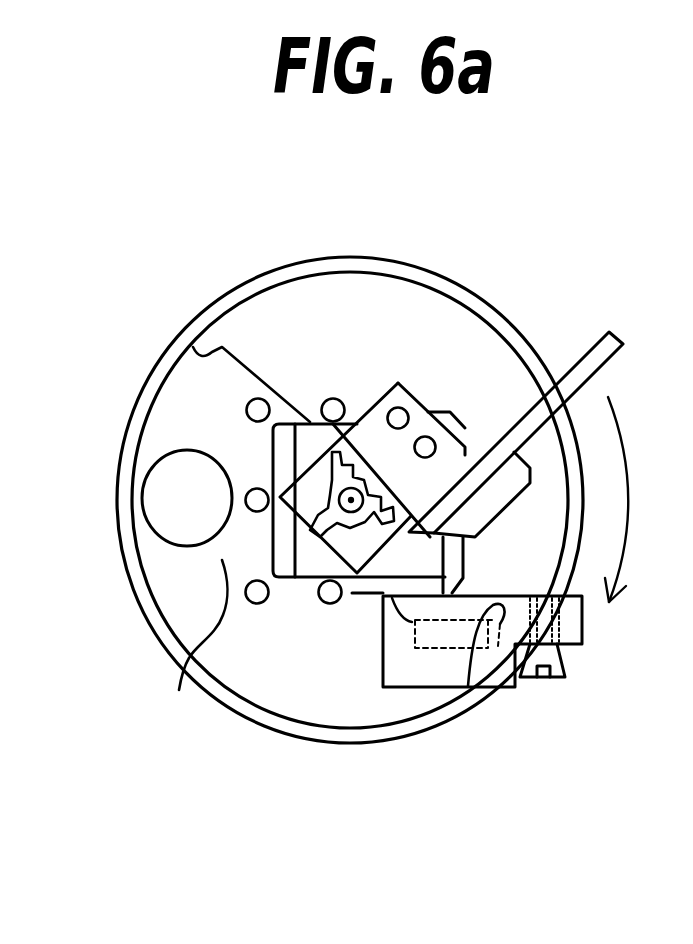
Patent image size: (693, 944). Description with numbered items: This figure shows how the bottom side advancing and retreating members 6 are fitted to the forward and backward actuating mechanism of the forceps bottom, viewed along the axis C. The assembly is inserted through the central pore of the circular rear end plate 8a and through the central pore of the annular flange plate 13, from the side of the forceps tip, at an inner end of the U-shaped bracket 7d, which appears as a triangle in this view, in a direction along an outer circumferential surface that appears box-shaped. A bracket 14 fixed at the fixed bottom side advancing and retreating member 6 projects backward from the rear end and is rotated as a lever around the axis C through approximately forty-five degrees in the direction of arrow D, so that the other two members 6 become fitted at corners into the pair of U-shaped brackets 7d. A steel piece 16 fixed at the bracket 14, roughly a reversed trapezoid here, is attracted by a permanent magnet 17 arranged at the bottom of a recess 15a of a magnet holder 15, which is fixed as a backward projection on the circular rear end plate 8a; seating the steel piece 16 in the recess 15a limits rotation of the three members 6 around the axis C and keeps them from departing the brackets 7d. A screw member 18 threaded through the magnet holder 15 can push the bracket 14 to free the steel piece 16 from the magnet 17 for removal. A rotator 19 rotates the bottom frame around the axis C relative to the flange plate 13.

The bottom side advancing and retreating members 6 is at (318, 425).
The U-shaped bracket 7d is at (193, 347).
The circular rear end plate 8a is at (405, 300).
The annular flange plate 13 is at (490, 293).
The bracket 14 is at (583, 352).
The magnet holder 15 is at (441, 688).
The recess 15a is at (465, 686).
The steel piece 16 is at (497, 495).
The permanent magnet 17 is at (452, 650).
The screw member 18 is at (558, 680).
The rotator 19 is at (147, 540).
The axis C is at (348, 585).
The arrow D is at (628, 441).